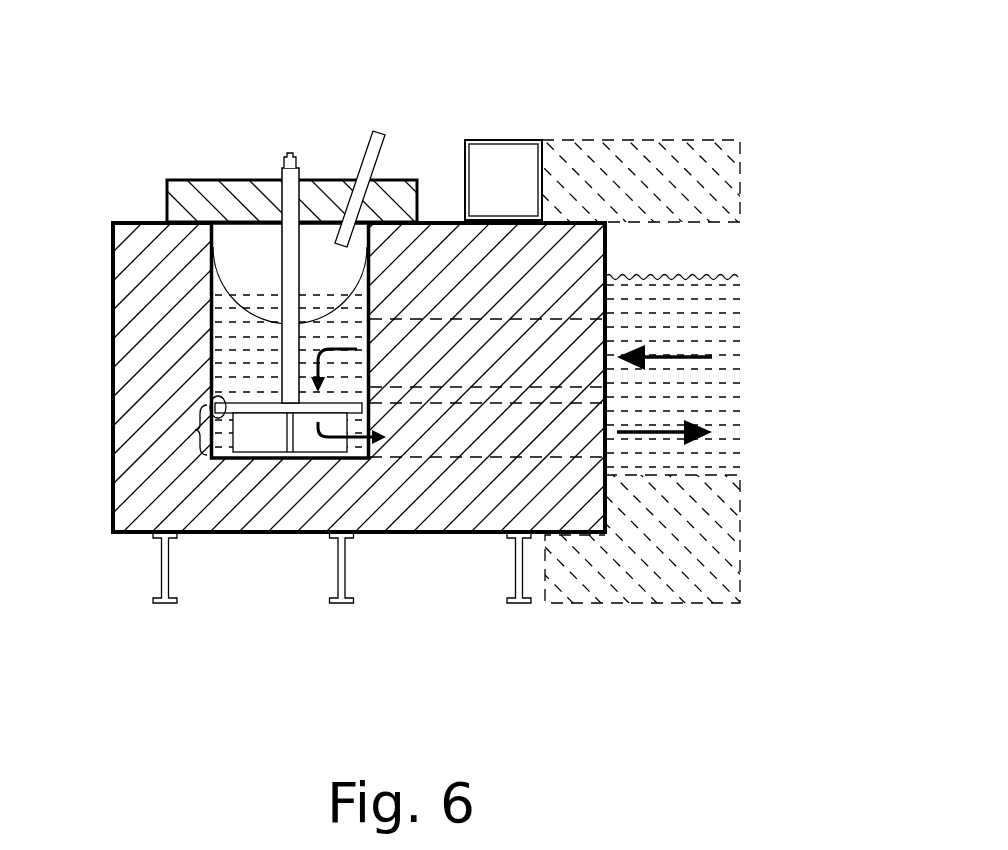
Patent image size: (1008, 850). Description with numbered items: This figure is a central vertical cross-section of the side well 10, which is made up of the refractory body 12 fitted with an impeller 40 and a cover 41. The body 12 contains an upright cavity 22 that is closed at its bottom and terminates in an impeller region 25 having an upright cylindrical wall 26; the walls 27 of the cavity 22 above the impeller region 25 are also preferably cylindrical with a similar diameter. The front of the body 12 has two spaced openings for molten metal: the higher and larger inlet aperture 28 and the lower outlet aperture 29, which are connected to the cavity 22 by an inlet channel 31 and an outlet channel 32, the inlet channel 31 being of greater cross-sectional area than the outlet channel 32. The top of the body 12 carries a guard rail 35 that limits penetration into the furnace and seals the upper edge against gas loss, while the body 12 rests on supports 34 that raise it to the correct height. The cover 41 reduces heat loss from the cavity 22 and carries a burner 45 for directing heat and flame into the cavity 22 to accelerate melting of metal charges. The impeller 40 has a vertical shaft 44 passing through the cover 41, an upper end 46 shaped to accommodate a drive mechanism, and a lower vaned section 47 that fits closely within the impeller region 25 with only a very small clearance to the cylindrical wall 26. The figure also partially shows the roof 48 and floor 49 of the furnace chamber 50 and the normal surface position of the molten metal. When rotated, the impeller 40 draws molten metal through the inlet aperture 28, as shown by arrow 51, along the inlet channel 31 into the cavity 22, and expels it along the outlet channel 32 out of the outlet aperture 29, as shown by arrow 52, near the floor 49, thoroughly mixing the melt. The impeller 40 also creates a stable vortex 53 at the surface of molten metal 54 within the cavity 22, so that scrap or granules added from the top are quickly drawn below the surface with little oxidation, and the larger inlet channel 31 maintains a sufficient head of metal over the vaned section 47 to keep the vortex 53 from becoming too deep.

The side well 10 is at (182, 104).
The body 12 is at (470, 292).
The cavity 22 is at (205, 243).
The impeller region 25 is at (196, 429).
The cylindrical wall 26 is at (207, 390).
The walls of the cavity 27 is at (210, 360).
The inlet aperture 28 is at (605, 338).
The outlet aperture 29 is at (606, 434).
The inlet channel 31 is at (475, 370).
The outlet channel 32 is at (475, 445).
The supports 34 is at (338, 568).
The guard rail 35 is at (507, 140).
The impeller 40 is at (298, 163).
The cover 41 is at (177, 195).
The vertical shaft 44 is at (290, 305).
The burner 45 is at (386, 138).
The upper end 46 is at (298, 167).
The vaned section 47 is at (250, 424).
The roof 48 is at (622, 167).
The floor 49 is at (733, 545).
The furnace chamber 50 is at (724, 247).
The arrow 51 is at (687, 357).
The arrow 52 is at (662, 430).
The vortex 53 is at (323, 317).
The surface of molten metal 54 is at (225, 357).